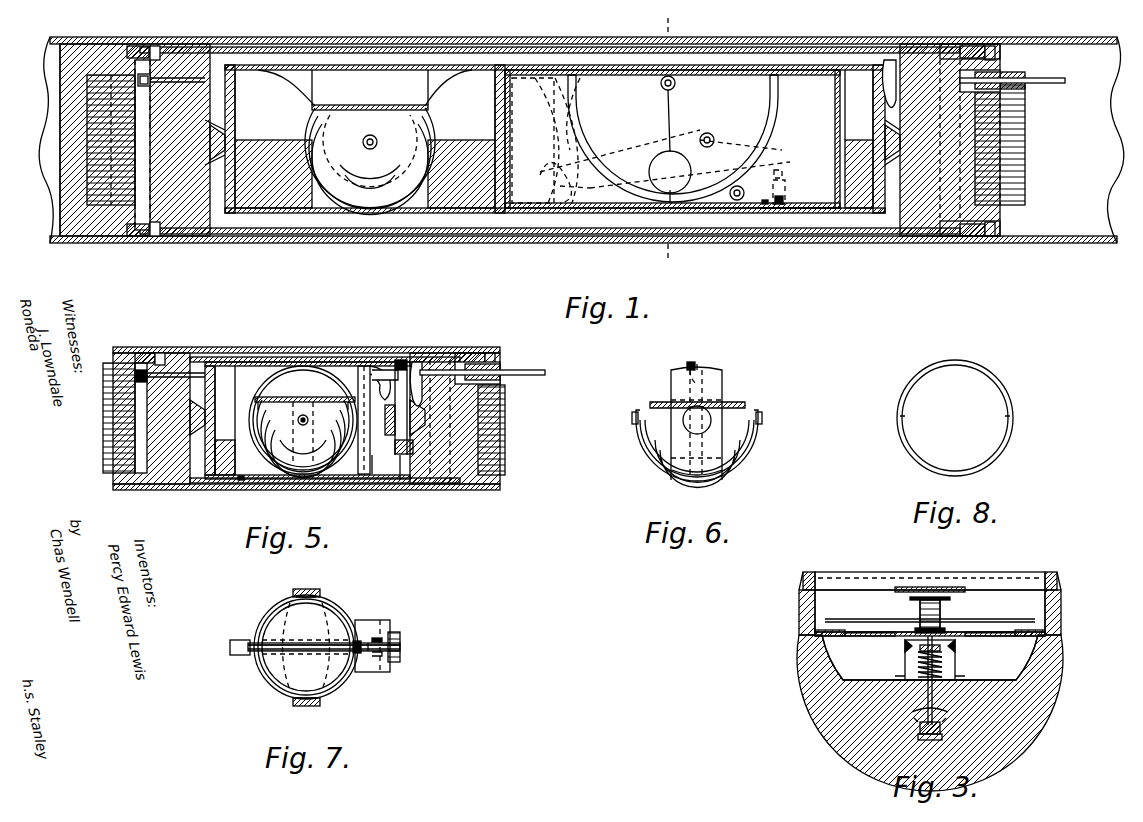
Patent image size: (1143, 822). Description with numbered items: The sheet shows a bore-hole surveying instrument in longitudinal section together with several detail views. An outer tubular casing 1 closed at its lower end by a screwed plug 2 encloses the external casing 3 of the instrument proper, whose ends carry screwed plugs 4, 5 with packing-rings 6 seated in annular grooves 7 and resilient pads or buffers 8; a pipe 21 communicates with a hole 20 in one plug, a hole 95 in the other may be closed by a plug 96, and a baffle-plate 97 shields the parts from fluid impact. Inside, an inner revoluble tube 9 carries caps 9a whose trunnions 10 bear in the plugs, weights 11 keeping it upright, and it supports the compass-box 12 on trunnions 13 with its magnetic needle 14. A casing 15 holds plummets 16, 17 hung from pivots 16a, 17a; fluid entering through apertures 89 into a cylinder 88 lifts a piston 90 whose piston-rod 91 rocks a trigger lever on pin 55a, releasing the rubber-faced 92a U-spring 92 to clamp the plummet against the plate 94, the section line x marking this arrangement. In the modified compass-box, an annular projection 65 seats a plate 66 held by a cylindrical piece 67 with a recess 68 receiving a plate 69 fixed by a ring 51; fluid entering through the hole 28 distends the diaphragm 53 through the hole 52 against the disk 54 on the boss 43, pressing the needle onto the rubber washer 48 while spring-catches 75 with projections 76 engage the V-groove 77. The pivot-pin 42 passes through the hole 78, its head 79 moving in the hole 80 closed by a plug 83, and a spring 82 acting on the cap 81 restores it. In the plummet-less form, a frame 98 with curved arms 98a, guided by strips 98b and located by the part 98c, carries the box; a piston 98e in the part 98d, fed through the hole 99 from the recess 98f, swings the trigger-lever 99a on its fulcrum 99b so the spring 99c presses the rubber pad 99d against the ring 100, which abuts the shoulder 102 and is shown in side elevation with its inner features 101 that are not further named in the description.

In FIG. 1, the outer tubular casing 1 is at (342, 42).
In FIG. 1, the screwed plug 2 is at (62, 140).
In FIG. 1, the external casing of the instrument proper 3 is at (372, 47).
In FIG. 5, the external casing of the instrument proper 3 is at (247, 357).
In FIG. 1, the screwed plug 4 is at (921, 66).
In FIG. 5, the screwed plug 4 is at (492, 355).
In FIG. 1, the screwed plug 5 is at (200, 62).
In FIG. 5, the screwed plug 5 is at (115, 350).
In FIG. 1, the packing-rings 6 is at (140, 46).
In FIG. 5, the packing-rings 6 is at (148, 355).
In FIG. 1, the annular grooves 7 is at (124, 46).
In FIG. 5, the annular grooves 7 is at (162, 355).
In FIG. 1, the pads or buffers 8 is at (1036, 133).
In FIG. 5, the pads or buffers 8 is at (112, 420).
In FIG. 1, the inner revoluble tube 9 is at (482, 66).
In FIG. 5, the inner revoluble tube 9 is at (273, 362).
In FIG. 1, the caps 9a is at (232, 98).
In FIG. 5, the caps 9a is at (405, 335).
In FIG. 1, the trunnions or pivots 10 is at (218, 150).
In FIG. 5, the trunnions or pivots 10 is at (205, 418).
In FIG. 1, the weights 11 is at (260, 150).
In FIG. 1, the compass-box 12 is at (370, 160).
In FIG. 5, the compass-box 12 is at (303, 438).
In FIG. 6, the compass-box 12 is at (760, 405).
In FIG. 7, the compass-box 12 is at (272, 607).
In FIG. 3, the compass-box 12 is at (860, 712).
In FIG. 1, the trunnions 13 is at (370, 149).
In FIG. 5, the trunnions 13 is at (298, 418).
In FIG. 6, the trunnions 13 is at (636, 418).
In FIG. 7, the trunnions 13 is at (303, 591).
In FIG. 3, the magnetic needle 14 is at (872, 620).
In FIG. 1, the casing 15 is at (612, 76).
In FIG. 1, the plummet 16 is at (672, 128).
In FIG. 1, the pivot or point of suspension 16a is at (676, 84).
In FIG. 1, the plummet 17 is at (610, 152).
In FIG. 1, the pivot or point of suspension 17a is at (710, 135).
In FIG. 1, the hole 20 is at (952, 70).
In FIG. 5, the hole 20 is at (452, 364).
In FIG. 1, the pipe 21 is at (1060, 78).
In FIG. 5, the pipe 21 is at (548, 372).
In FIG. 1, the hole 28 is at (296, 74).
In FIG. 3, the pivot-pin 42 is at (935, 700).
In FIG. 3, the boss 43 is at (942, 612).
In FIG. 3, the rubber ring or washer 48 is at (815, 633).
In FIG. 3, the ring 51 is at (810, 572).
In FIG. 3, the hole 52 is at (950, 588).
In FIG. 3, the rubber disk or diaphragm 53 is at (923, 578).
In FIG. 1, the disk or plate 54 is at (760, 162).
In FIG. 3, the disk or plate 54 is at (950, 598).
In FIG. 1, the pin 55a is at (749, 185).
In FIG. 3, the internal annular projection 65 is at (800, 650).
In FIG. 3, the plate 66 is at (862, 642).
In FIG. 3, the ring or cylindrical piece 67 is at (808, 617).
In FIG. 3, the recess 68 is at (818, 598).
In FIG. 3, the plate 69 is at (806, 578).
In FIG. 3, the spring-catches 75 is at (905, 662).
In FIG. 3, the projections 76 is at (903, 646).
In FIG. 3, the V-groove 77 is at (920, 630).
In FIG. 3, the hole 78 is at (915, 720).
In FIG. 3, the head or enlargement 79 is at (942, 722).
In FIG. 3, the hole 80 is at (920, 735).
In FIG. 3, the cap or disk 81 is at (945, 648).
In FIG. 3, the spring 82 is at (955, 665).
In FIG. 3, the plug 83 is at (940, 735).
In FIG. 1, the cylinder 88 is at (795, 202).
In FIG. 1, the apertures 89 is at (796, 214).
In FIG. 1, the piston 90 is at (800, 182).
In FIG. 1, the piston-rod 91 is at (790, 170).
In FIG. 1, the U-shaped spring 92 is at (588, 117).
In FIG. 1, the strip of rubber 92a is at (782, 150).
In FIG. 1, the plate 94 is at (552, 88).
In FIG. 1, the hole 95 is at (180, 78).
In FIG. 5, the hole 95 is at (178, 372).
In FIG. 1, the plug 96 is at (145, 74).
In FIG. 1, the baffle-plate 97 is at (890, 60).
In FIG. 5, the baffle-plate 97 is at (420, 360).
In FIG. 5, the frame or carriage 98 is at (138, 370).
In FIG. 6, the frame or carriage 98 is at (680, 470).
In FIG. 7, the frame or carriage 98 is at (362, 635).
In FIG. 5, the curved arms 98a is at (290, 445).
In FIG. 6, the curved arms 98a is at (640, 430).
In FIG. 7, the curved arms 98a is at (318, 592).
In FIG. 5, the strips 98b is at (312, 397).
In FIG. 5, the part of the frame 98c is at (238, 480).
In FIG. 7, the part of the frame 98c is at (230, 645).
In FIG. 5, the part of the frame 98d is at (400, 360).
In FIG. 6, the part of the frame 98d is at (678, 390).
In FIG. 7, the part of the frame 98d is at (388, 622).
In FIG. 5, the piston 98e is at (445, 484).
In FIG. 6, the piston 98e is at (705, 428).
In FIG. 7, the piston 98e is at (400, 647).
In FIG. 5, the annular recess 98f is at (412, 484).
In FIG. 5, the hole 99 is at (470, 440).
In FIG. 5, the trigger-lever 99a is at (360, 385).
In FIG. 6, the trigger-lever 99a is at (705, 368).
In FIG. 7, the trigger-lever 99a is at (380, 655).
In FIG. 5, the fulcrum 99b is at (378, 374).
In FIG. 6, the fulcrum 99b is at (690, 372).
In FIG. 7, the fulcrum 99b is at (385, 660).
In FIG. 5, the spring 99c is at (392, 482).
In FIG. 7, the spring 99c is at (358, 635).
In FIG. 7, the rubber pad 99d is at (370, 650).
In FIG. 5, the ring 100 is at (270, 384).
In FIG. 6, the ring 100 is at (695, 362).
In FIG. 8, the ring 100 is at (945, 360).
In FIG. 7, the ring 100 is at (340, 636).
In FIG. 5, the ring ledge 101 is at (255, 415).
In FIG. 8, the ring ledge 101 is at (902, 418).
In FIG. 7, the annular shoulder 102 is at (250, 643).
In FIG. 1, the section line X X x is at (666, 139).